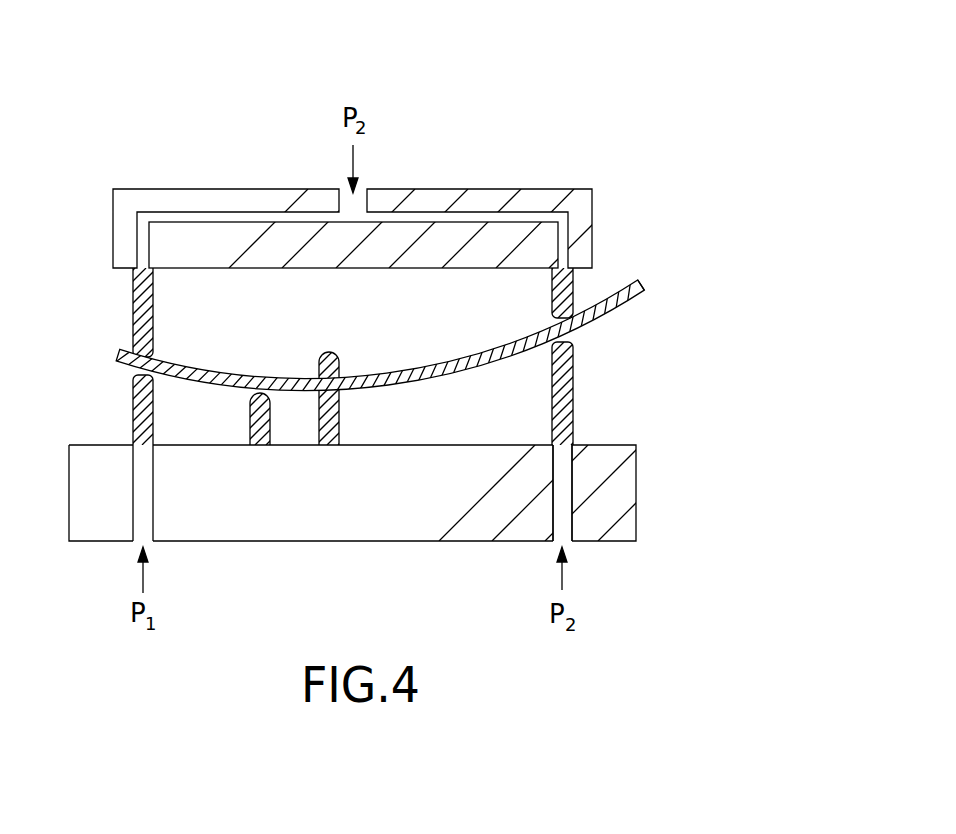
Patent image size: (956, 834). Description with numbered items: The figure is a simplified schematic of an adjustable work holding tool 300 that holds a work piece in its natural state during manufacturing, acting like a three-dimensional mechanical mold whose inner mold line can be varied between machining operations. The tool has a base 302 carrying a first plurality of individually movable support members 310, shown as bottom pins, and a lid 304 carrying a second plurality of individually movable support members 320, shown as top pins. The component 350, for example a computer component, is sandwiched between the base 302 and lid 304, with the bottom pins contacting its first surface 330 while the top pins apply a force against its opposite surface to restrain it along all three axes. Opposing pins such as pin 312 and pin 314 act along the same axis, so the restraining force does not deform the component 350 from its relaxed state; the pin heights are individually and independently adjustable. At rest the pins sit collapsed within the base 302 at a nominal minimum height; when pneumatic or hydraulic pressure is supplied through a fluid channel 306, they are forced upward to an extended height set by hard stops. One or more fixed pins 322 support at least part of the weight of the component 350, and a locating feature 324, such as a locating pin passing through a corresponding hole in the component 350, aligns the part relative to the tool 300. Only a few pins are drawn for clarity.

The work holding tool 300 is at (636, 76).
The base 302 is at (636, 466).
The lid 304 is at (584, 200).
The fluid channel 306 is at (564, 520).
The first plurality of individually movable support members 310 is at (573, 407).
The individually movable pin 312 is at (132, 407).
The individually movable pin 314 is at (132, 291).
The second plurality of individually movable support members 320 is at (574, 287).
The fixed pin 322 is at (181, 371).
The locating feature 324 is at (340, 414).
The first surface 330 is at (126, 367).
The component 350 is at (633, 294).